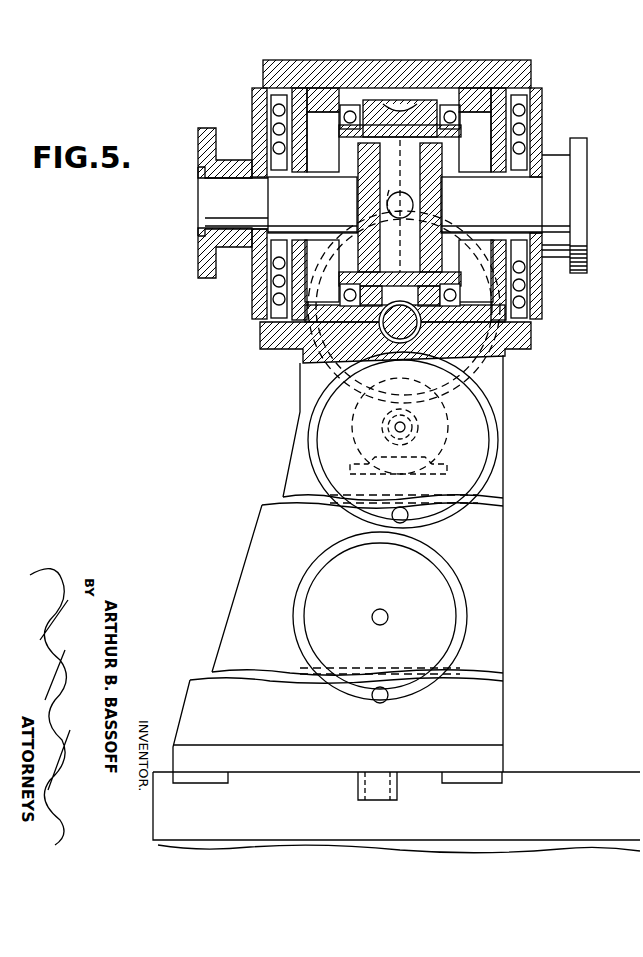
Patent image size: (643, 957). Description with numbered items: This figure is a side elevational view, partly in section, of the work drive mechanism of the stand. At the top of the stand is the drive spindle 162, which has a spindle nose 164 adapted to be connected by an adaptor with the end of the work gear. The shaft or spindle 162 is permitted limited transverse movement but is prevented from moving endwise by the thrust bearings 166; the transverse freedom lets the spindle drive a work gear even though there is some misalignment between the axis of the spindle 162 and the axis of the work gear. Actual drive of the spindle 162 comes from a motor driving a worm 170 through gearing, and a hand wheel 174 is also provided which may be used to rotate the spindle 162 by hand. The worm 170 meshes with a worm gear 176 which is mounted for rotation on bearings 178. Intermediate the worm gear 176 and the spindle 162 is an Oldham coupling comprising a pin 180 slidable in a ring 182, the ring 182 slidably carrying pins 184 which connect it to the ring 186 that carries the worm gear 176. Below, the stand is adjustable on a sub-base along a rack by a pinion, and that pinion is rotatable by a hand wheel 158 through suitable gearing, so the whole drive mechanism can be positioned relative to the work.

The hand wheel 158 is at (463, 595).
The drive spindle 162 is at (330, 193).
The spindle nose 164 is at (586, 163).
The thrust bearings 166 is at (253, 103).
The worm 170 is at (300, 356).
The hand wheel 174 is at (498, 465).
The worm gear 176 is at (407, 92).
The bearings 178 is at (260, 321).
The pin 180 is at (437, 193).
The ring 182 is at (453, 222).
The pins 184 is at (357, 223).
The ring 186 is at (338, 140).